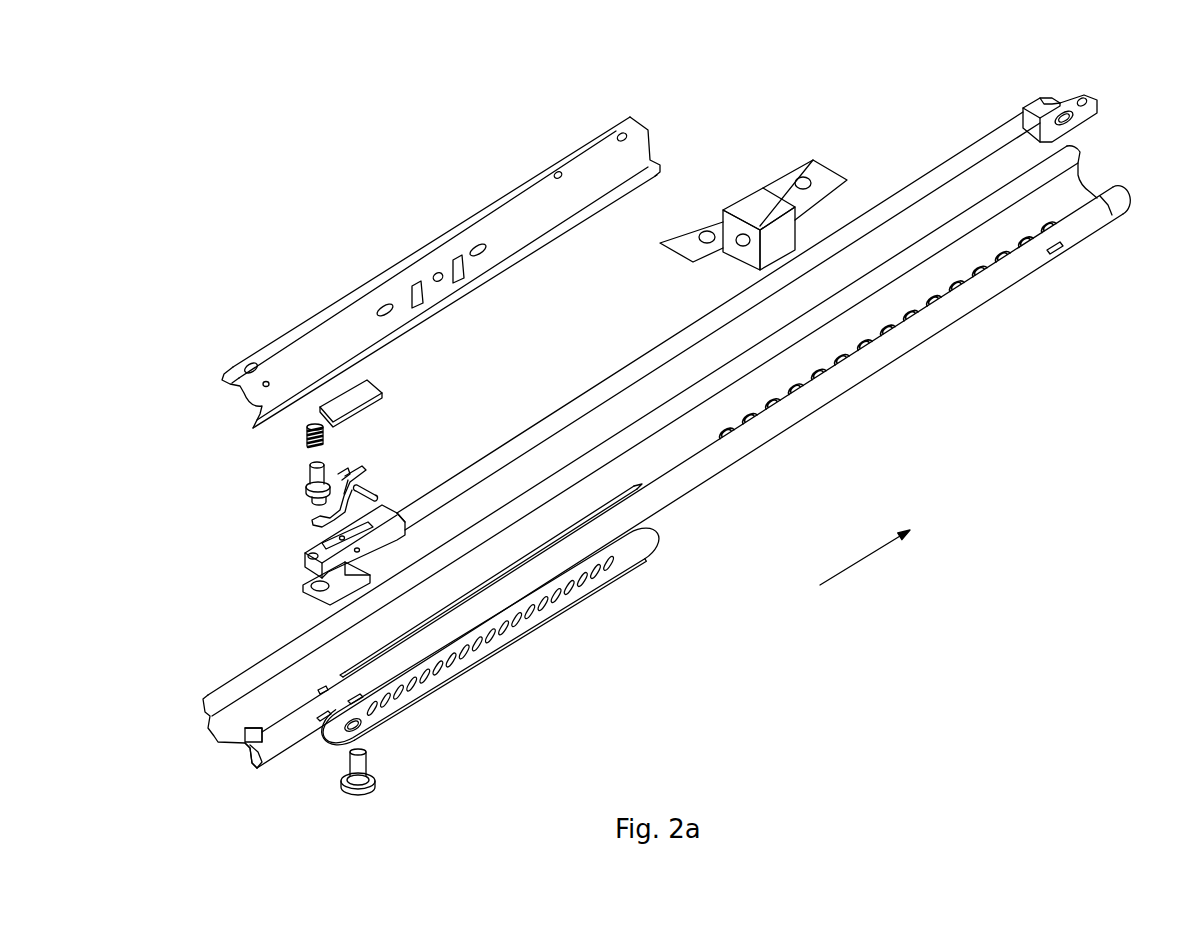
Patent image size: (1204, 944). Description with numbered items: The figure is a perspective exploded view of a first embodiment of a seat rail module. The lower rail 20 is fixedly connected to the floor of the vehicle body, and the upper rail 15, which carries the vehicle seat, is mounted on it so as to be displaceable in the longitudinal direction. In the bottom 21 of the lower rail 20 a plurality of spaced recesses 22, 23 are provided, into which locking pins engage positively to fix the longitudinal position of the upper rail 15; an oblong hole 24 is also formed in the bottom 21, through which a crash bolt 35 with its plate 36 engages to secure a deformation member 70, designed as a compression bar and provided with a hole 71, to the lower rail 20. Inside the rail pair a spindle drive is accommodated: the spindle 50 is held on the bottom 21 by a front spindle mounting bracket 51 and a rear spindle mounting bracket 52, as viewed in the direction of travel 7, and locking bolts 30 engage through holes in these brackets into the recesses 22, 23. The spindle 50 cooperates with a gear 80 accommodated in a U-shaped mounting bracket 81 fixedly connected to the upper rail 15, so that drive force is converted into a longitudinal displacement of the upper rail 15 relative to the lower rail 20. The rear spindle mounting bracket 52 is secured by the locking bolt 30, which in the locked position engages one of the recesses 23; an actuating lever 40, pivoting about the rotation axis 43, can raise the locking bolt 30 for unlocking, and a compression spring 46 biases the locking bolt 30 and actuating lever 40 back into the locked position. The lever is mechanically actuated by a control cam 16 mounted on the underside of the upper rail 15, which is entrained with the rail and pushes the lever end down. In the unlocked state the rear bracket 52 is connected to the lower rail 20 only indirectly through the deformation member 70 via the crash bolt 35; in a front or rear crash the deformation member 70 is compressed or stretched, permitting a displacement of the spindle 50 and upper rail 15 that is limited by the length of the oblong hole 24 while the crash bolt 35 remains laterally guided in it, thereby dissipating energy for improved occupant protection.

The direction of travel 7 is at (865, 574).
The upper rail 15 is at (633, 152).
The control cam 16 is at (360, 393).
The lower rail 20 is at (1062, 168).
The bottom of lower rail 21 is at (1060, 207).
The recess 22 is at (927, 307).
The recess 23 is at (253, 764).
The oblong hole 24 is at (588, 520).
The locking bolt 30 is at (304, 474).
The crash bolt 35 is at (349, 763).
The plate of crash bolt 36 is at (353, 792).
The actuating lever 40 is at (357, 477).
The rotation axis 43 is at (378, 492).
The compression spring 46 is at (305, 439).
The spindle 50 is at (647, 366).
The front spindle mounting bracket 51 is at (1062, 110).
The rear spindle mounting bracket 52 is at (313, 556).
The deformation member 70 is at (515, 633).
The hole 71 is at (370, 732).
The gear 80 is at (757, 205).
The mounting bracket 81 is at (817, 172).